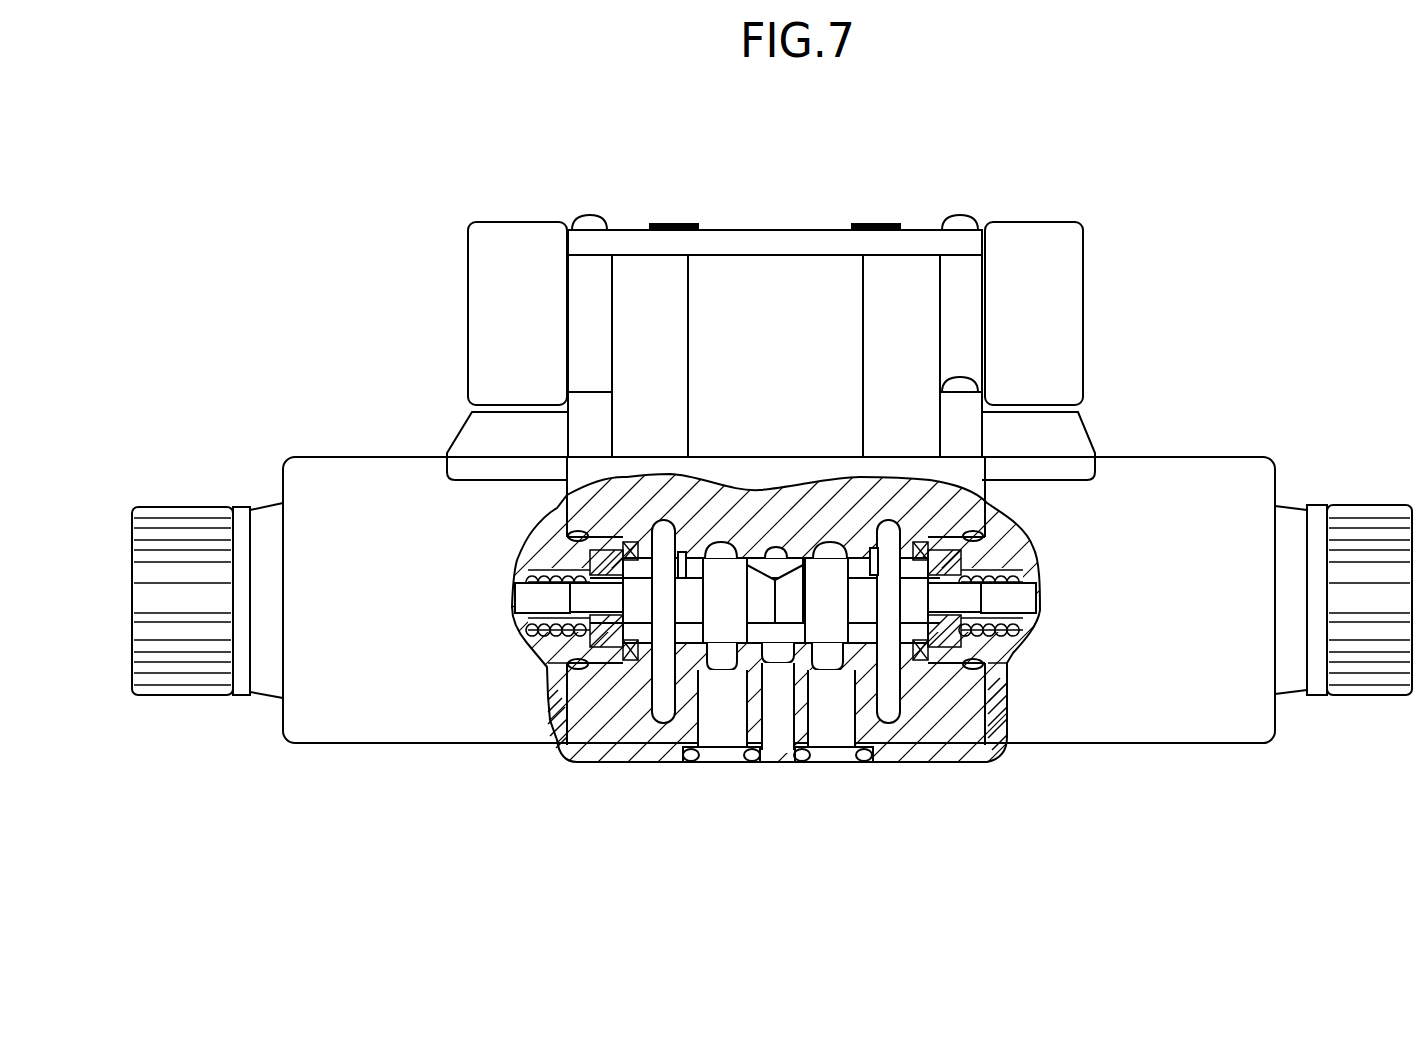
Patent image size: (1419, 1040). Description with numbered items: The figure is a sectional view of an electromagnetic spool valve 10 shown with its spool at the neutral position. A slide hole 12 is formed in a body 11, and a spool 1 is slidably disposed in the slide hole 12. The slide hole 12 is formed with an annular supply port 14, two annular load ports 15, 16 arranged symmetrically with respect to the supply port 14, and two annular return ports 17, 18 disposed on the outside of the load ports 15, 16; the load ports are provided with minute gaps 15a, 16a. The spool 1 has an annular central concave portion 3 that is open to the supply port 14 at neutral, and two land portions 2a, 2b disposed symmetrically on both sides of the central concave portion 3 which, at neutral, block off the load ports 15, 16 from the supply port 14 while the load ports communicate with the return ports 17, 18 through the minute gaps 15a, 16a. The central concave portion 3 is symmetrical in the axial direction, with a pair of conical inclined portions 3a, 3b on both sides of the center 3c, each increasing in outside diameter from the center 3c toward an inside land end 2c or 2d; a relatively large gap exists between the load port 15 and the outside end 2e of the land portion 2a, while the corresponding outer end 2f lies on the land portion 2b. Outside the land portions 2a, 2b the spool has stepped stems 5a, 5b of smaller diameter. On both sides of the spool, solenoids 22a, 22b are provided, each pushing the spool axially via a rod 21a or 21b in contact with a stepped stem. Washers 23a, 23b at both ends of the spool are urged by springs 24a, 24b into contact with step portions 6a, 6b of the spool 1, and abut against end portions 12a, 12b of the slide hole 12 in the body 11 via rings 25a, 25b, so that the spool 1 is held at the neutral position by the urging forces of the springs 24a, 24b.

The spool valve 10 is at (1128, 265).
The solenoid 22a is at (310, 478).
The solenoid 22b is at (1243, 478).
The body 11 is at (940, 700).
The spool 1 is at (600, 590).
The return port 17 is at (660, 718).
The return port 18 is at (888, 720).
The land portion 2a is at (720, 556).
The land portion 2b is at (848, 556).
The inside land end 2c is at (757, 560).
The inside land end 2d is at (820, 550).
The outside end of land portion 2e is at (662, 530).
The spool pin 2f is at (912, 548).
The central concave portion 3 is at (778, 560).
The inclined portion 3a is at (733, 665).
The inclined portion 3b is at (815, 665).
The center 3c is at (785, 555).
The supply port 14 is at (777, 680).
The load port 15 is at (708, 700).
The load port 16 is at (835, 700).
The slide hole 12 is at (722, 680).
The minute gap 15a is at (688, 752).
The minute gap 16a is at (862, 752).
The washer 23a is at (560, 532).
The washer 23b is at (1000, 534).
The spring 24a is at (535, 627).
The spring 24b is at (990, 562).
The step portion 6a is at (560, 632).
The step portion 6b is at (990, 632).
The rod 21a is at (535, 595).
The rod 21b is at (1025, 594).
The stepped stem 5a is at (597, 607).
The stepped stem 5b is at (995, 606).
The ring 25a is at (563, 748).
The ring 25b is at (990, 740).
The end portion of slide hole 12a is at (597, 740).
The end portion of slide hole 12b is at (950, 742).